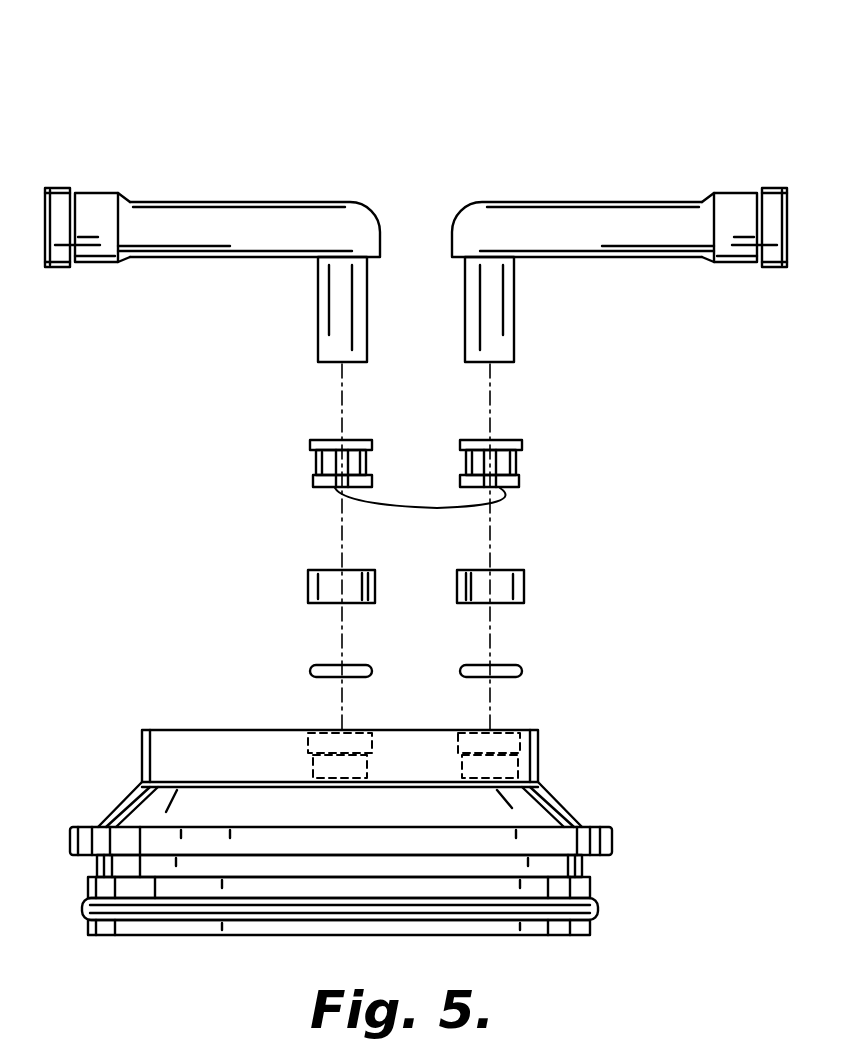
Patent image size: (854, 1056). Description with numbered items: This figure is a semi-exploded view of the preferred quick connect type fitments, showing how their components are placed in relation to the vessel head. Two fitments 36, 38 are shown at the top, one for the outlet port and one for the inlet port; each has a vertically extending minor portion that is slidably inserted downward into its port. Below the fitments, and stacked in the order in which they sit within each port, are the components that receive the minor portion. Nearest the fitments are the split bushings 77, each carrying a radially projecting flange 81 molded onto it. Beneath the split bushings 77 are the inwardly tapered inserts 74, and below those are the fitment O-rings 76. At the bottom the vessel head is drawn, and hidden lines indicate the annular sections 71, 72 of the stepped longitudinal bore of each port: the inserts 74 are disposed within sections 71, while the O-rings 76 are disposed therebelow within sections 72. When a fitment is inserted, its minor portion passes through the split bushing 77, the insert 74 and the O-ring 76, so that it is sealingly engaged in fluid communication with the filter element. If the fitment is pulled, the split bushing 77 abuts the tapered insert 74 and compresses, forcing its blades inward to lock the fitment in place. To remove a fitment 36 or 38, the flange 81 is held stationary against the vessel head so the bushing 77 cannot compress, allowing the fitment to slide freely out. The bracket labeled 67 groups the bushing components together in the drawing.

The fitment 36 is at (210, 204).
The fitment 38 is at (553, 210).
The radially projecting flange 81 is at (416, 434).
The split bushing 77 is at (462, 461).
The grommets 67 is at (420, 517).
The inwardly tapered insert 74 is at (458, 580).
The fitment O-ring 76 is at (462, 665).
The annular section 71 is at (414, 745).
The annular section 72 is at (415, 767).